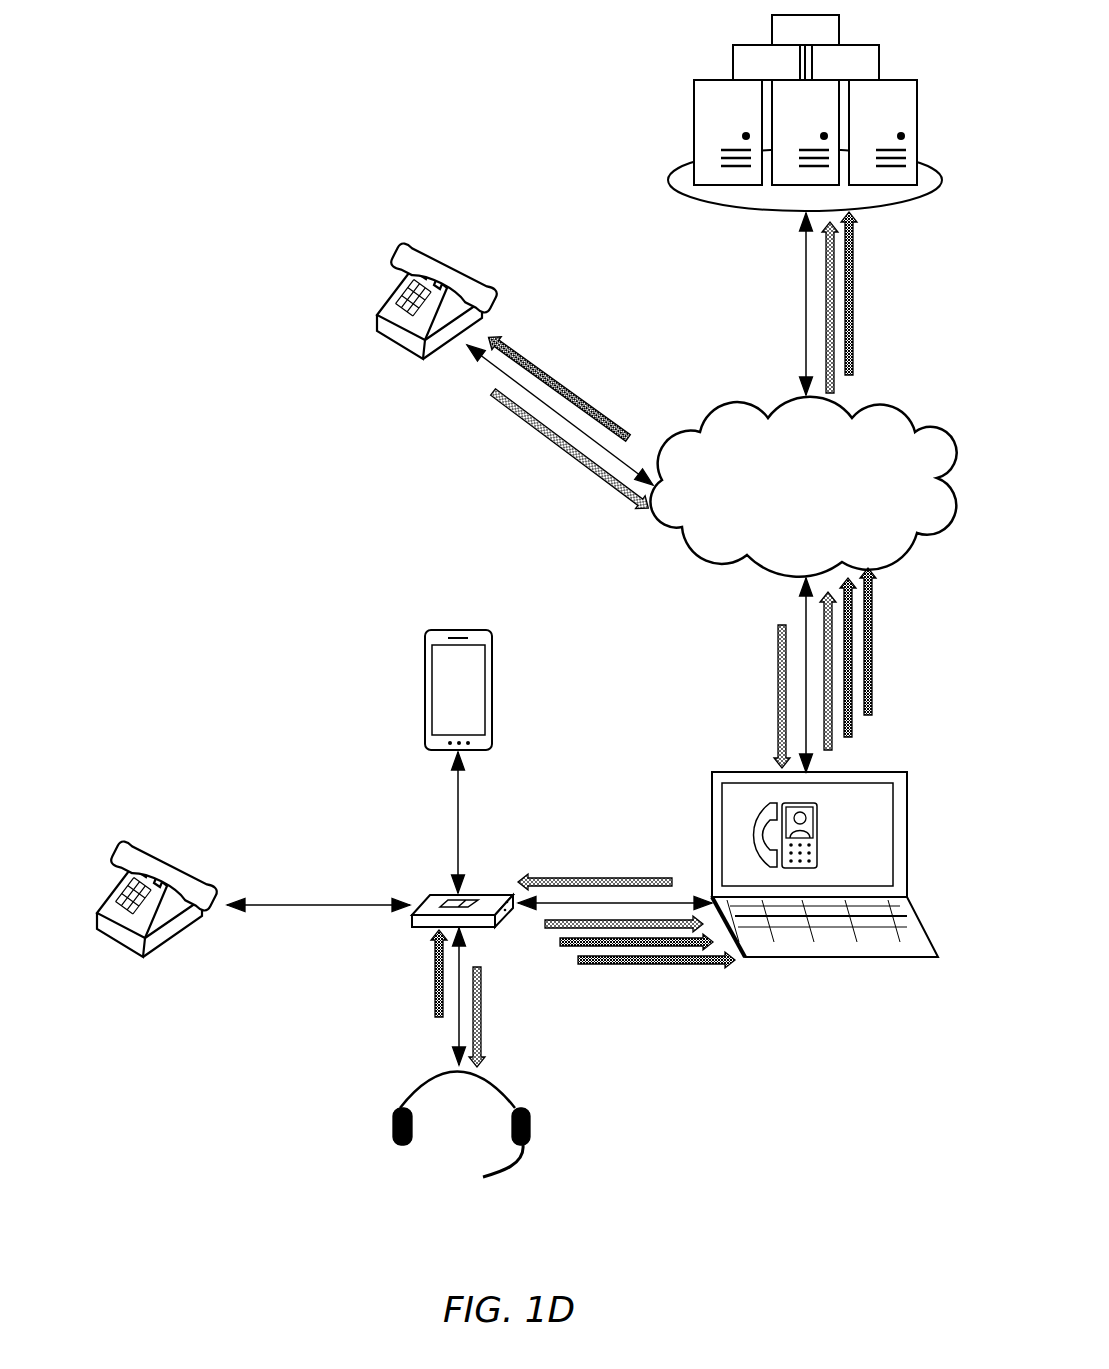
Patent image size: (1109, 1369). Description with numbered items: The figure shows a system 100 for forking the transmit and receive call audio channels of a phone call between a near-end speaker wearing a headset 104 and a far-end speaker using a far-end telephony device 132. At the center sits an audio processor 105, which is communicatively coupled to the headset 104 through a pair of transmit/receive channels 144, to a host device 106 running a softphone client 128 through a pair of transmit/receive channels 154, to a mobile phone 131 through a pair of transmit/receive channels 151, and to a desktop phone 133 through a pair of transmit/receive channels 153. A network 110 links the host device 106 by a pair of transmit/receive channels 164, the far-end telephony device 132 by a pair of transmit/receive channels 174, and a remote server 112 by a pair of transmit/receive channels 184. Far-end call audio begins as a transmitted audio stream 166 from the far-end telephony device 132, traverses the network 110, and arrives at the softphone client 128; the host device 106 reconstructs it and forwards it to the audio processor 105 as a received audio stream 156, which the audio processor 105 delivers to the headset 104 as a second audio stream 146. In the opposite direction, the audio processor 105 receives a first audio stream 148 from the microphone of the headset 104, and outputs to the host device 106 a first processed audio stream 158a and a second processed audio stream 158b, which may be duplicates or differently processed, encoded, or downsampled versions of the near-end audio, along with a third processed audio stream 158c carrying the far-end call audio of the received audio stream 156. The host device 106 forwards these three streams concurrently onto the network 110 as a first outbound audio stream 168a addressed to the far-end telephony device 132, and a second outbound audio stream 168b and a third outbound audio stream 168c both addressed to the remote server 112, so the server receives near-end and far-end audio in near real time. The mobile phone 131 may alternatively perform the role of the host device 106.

The communication system 100 is at (168, 1240).
The headset 104 is at (513, 1103).
The audio processor 105 is at (484, 895).
The host device 106 is at (928, 940).
The network 110 is at (826, 513).
The remote server 112 is at (694, 150).
The softphone client 128 is at (818, 806).
The mobile phone 131 is at (488, 632).
The far-end telephony device 132 is at (418, 240).
The desktop phone 133 is at (140, 852).
The transmit/receive channels 144 is at (457, 1038).
The second audio stream 146 is at (485, 1018).
The first audio stream 148 is at (435, 990).
The transmit/receive channels 151 is at (457, 800).
The transmit/receive channels 153 is at (268, 910).
The transmit/receive channels 154 is at (675, 900).
The received audio stream 156 is at (550, 880).
The first processed audio stream 158a is at (690, 962).
The second processed audio stream 158b is at (562, 946).
The third processed audio stream 158c is at (545, 926).
The transmit/receive channels 164 is at (806, 612).
The transmitted audio stream 166 is at (550, 440).
The first outbound audio stream 168a is at (556, 380).
The second outbound audio stream 168b is at (855, 366).
The third outbound audio stream 168c is at (836, 385).
The transmit/receive channels 174 is at (494, 368).
The transmit/receive channels 184 is at (806, 316).